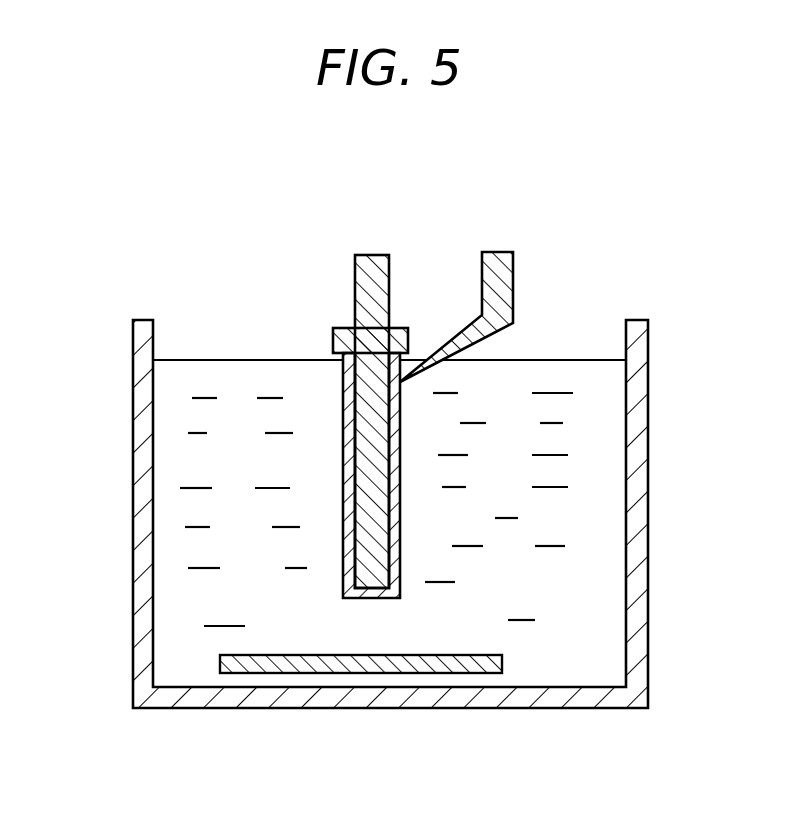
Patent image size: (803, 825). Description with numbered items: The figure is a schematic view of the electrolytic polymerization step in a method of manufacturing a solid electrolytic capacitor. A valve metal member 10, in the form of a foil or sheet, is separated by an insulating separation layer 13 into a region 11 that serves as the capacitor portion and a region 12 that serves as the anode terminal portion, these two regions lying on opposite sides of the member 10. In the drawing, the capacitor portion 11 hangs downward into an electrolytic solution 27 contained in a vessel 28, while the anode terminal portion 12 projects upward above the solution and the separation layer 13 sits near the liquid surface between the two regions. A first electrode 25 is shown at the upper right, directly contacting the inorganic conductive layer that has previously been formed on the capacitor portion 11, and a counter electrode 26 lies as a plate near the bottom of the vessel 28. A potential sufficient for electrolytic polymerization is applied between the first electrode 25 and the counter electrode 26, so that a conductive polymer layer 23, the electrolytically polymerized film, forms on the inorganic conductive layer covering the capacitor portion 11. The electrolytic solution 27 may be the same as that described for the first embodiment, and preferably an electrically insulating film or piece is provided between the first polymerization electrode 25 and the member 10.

The valve metal member 10 is at (305, 549).
The region serving as the capacitor portion 11 is at (350, 460).
The region serving as the anode terminal portion 12 is at (392, 278).
The insulating separation layer 13 is at (333, 340).
The conductive polymer layer 23 is at (400, 570).
The first electrode 25 is at (513, 252).
The counter electrode 26 is at (437, 668).
The electrolytic solution 27 is at (590, 470).
The vessel 28 is at (638, 540).